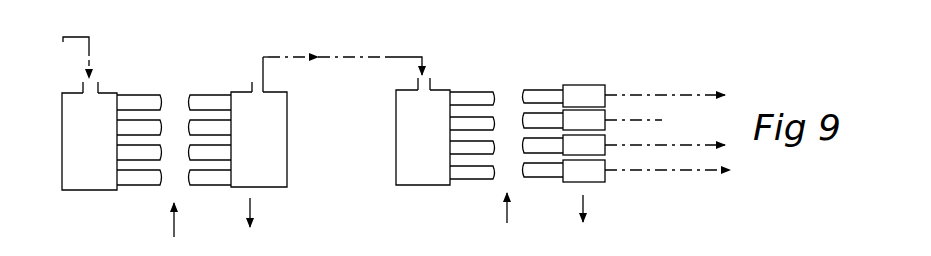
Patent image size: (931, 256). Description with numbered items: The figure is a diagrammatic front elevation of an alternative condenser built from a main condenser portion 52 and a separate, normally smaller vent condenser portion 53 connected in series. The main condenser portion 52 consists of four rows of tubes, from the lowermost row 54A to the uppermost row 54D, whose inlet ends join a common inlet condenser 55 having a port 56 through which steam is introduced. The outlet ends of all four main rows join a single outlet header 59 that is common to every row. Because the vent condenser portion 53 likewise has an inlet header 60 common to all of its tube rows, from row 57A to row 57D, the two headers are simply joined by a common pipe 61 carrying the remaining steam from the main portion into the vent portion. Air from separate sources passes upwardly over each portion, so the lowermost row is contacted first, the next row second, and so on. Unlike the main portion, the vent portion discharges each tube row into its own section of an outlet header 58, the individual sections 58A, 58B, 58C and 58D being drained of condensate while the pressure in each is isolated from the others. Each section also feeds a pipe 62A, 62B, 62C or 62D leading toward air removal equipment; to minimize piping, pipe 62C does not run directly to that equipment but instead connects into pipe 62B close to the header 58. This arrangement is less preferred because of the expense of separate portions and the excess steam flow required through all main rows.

The main condenser portion 52 is at (127, 91).
The vent condenser portion 53 is at (522, 81).
The tube row of main condenser portion 54A is at (197, 182).
The tube row of main condenser portion 54D is at (197, 95).
The inlet condenser 55 is at (97, 187).
The port 56 is at (82, 92).
The tube row of vent condenser portion 57A is at (468, 180).
The tube row of vent condenser portion 57D is at (490, 76).
The outlet header 58 is at (611, 129).
The outlet header section 58A is at (592, 182).
The outlet header section 58B is at (567, 153).
The outlet header section 58C is at (598, 118).
The outlet header section 58D is at (565, 85).
The outlet header 59 is at (267, 183).
The inlet header 60 is at (408, 180).
The common pipe 61 is at (342, 55).
The pipe 62A is at (655, 168).
The pipe 62B is at (675, 145).
The pipe 62C is at (653, 139).
The pipe 62D is at (662, 95).